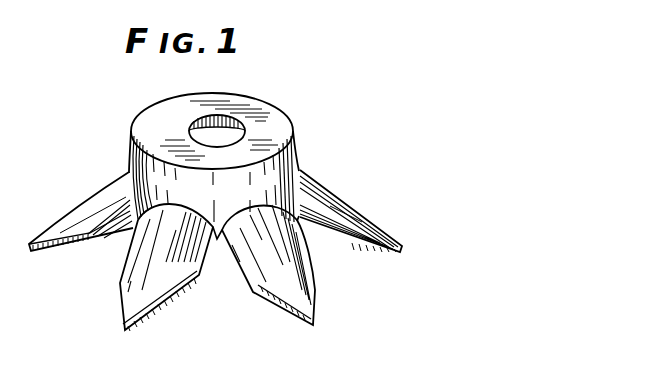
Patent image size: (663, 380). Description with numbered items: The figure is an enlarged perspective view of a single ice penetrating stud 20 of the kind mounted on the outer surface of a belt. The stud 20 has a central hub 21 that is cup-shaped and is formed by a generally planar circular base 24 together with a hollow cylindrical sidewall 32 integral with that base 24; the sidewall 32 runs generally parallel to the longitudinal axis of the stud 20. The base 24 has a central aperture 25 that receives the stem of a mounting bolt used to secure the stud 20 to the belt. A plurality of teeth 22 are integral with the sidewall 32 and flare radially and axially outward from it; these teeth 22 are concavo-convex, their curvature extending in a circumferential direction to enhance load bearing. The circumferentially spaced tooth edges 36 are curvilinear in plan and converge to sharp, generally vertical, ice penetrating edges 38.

The ice penetrating stud 20 is at (339, 147).
The central hub 21 is at (283, 104).
The teeth 22 is at (341, 245).
The base 24 is at (280, 111).
The aperture 25 is at (191, 120).
The sidewall 32 is at (128, 163).
The tooth edges 36 is at (238, 272).
The ice penetrating edges 38 is at (307, 324).